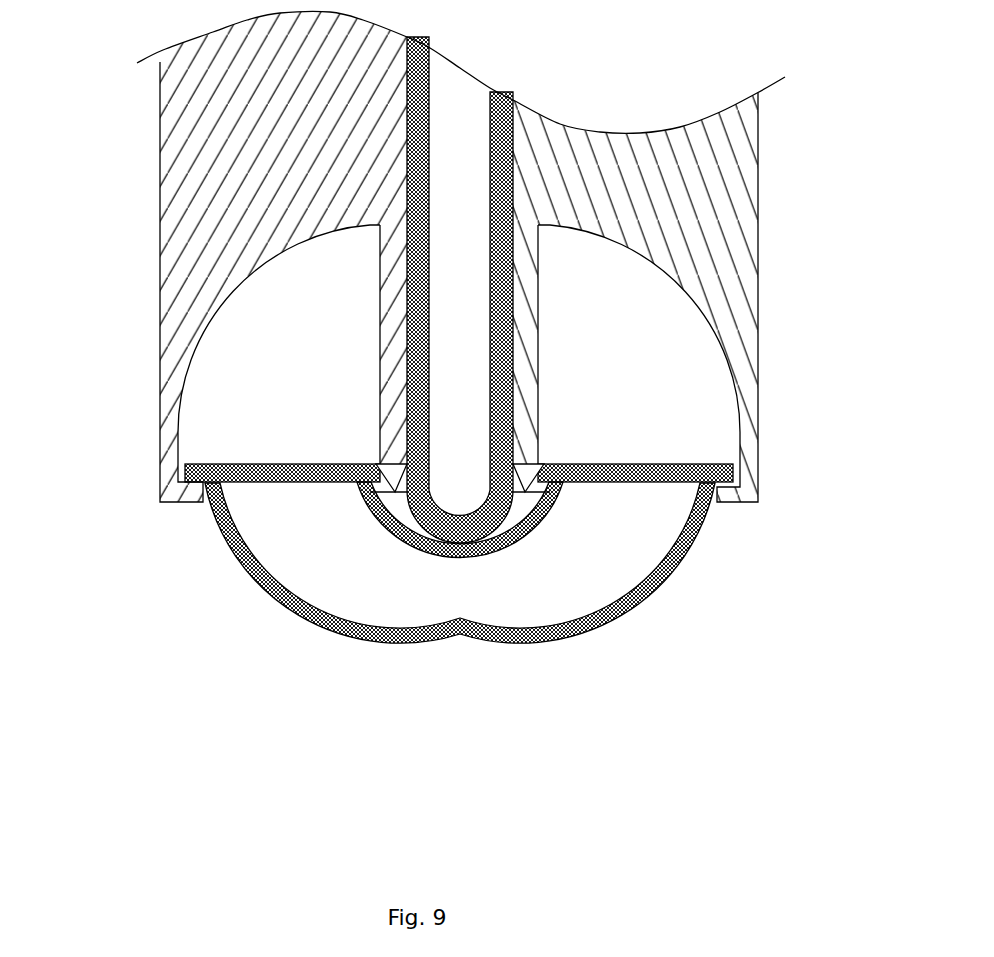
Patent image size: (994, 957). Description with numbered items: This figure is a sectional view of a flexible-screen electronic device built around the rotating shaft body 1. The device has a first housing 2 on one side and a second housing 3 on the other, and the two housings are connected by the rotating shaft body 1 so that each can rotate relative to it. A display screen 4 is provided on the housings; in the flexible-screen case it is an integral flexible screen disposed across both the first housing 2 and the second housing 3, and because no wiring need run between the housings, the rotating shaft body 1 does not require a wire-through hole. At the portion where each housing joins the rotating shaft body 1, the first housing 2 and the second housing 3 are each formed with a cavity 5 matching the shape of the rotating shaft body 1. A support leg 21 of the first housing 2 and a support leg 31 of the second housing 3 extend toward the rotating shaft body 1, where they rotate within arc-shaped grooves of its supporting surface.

The rotating shaft body 1 is at (438, 665).
The first housing 2 is at (258, 126).
The second housing 3 is at (727, 243).
The display screen 4 is at (418, 153).
The cavity 5 is at (258, 385).
The support leg 21 is at (388, 477).
The support leg 31 is at (532, 477).